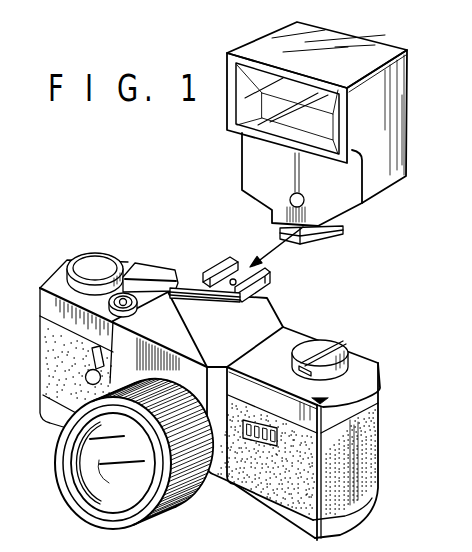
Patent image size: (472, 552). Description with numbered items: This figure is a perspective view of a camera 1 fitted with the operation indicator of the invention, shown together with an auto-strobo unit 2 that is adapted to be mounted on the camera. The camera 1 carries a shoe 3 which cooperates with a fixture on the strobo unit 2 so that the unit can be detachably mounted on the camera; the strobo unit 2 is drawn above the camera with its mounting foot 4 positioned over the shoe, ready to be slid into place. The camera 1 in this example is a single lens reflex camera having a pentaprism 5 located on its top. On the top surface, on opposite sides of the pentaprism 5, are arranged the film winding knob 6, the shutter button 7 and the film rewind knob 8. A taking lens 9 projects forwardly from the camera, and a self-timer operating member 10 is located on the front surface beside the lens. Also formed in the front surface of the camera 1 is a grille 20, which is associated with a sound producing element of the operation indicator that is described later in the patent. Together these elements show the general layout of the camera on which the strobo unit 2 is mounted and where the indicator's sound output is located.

The camera 1 is at (293, 338).
The auto-strobo unit 2 is at (402, 118).
The shoe 3 is at (222, 270).
The flash mounting foot 4 is at (338, 233).
The pentaprism 5 is at (200, 300).
The film winding knob 6 is at (148, 269).
The shutter button 7 is at (124, 304).
The film rewind knob 8 is at (337, 347).
The taking lens 9 is at (97, 471).
The self-timer operating member 10 is at (103, 363).
The grille 20 is at (247, 420).